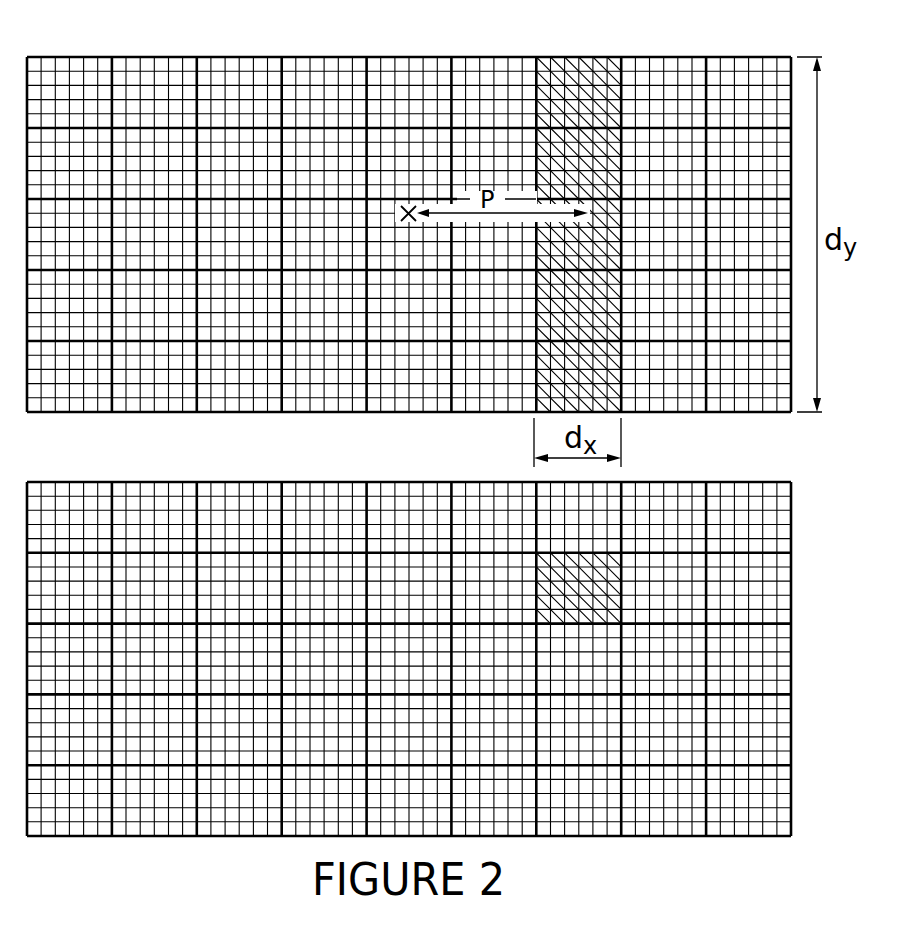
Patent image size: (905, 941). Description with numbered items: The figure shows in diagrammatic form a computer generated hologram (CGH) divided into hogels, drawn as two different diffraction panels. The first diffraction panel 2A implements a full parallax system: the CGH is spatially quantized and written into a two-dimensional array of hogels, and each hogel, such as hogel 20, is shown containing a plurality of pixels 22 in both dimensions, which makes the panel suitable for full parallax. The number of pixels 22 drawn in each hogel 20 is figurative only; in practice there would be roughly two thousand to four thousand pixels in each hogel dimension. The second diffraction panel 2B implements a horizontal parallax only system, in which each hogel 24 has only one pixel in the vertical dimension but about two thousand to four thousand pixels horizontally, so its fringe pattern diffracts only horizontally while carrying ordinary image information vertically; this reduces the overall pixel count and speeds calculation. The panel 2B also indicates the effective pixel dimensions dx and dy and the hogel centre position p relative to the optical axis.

The first diffraction panel 2A is at (78, 480).
The second diffraction panel 2B is at (78, 55).
The hogel 20 is at (623, 581).
The pixels 22 is at (672, 390).
The hogel 24 is at (623, 100).